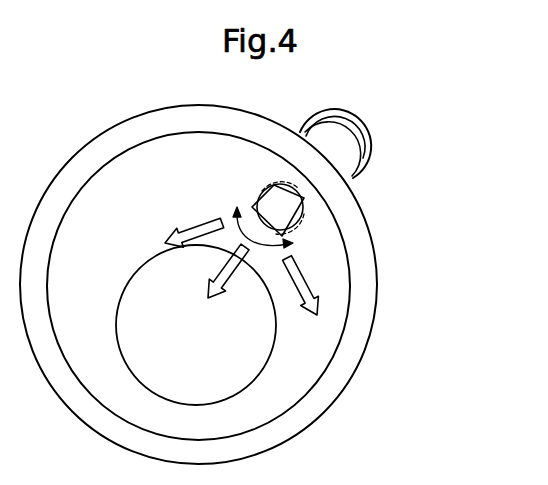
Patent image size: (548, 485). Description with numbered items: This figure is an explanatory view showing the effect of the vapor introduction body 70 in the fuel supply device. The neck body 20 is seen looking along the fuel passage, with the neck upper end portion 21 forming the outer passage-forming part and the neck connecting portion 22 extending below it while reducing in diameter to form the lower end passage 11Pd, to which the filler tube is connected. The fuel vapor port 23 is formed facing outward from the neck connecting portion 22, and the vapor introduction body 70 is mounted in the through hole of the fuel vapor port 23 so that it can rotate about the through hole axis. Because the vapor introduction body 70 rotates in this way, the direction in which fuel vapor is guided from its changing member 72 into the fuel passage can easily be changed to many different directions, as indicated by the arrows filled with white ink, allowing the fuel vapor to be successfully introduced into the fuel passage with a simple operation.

The neck body 20 is at (273, 284).
The neck upper end portion 21 is at (361, 240).
The neck connecting portion 22 is at (248, 286).
The fuel vapor port 23 is at (346, 145).
The vapor introduction body 70 is at (287, 236).
The changing member 72 is at (284, 205).
The lower end passage 11Pd is at (259, 351).